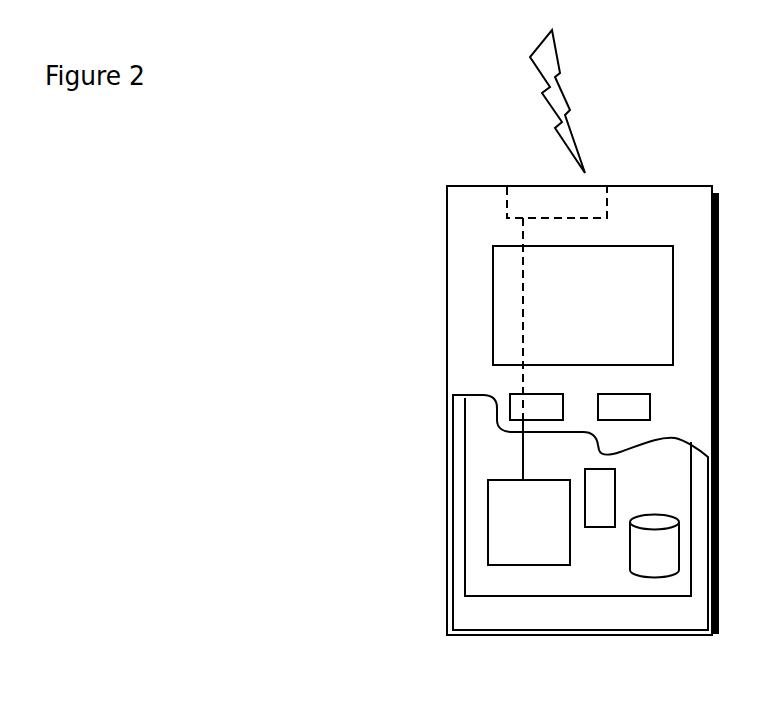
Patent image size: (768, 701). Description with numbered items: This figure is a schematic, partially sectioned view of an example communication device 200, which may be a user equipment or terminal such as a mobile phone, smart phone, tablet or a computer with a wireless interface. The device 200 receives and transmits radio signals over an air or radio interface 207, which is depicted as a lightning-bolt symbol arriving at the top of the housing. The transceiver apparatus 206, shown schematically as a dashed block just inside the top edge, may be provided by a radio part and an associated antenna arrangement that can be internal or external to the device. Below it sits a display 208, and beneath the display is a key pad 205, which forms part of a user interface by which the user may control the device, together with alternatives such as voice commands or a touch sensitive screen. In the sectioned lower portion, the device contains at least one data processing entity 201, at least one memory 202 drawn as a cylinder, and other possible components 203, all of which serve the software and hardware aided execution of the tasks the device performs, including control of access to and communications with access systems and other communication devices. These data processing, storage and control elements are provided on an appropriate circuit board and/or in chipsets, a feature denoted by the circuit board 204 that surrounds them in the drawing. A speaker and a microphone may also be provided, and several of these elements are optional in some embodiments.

The communication device 200 is at (447, 225).
The data processing entity 201 is at (493, 508).
The memory 202 is at (648, 557).
The other components 203 is at (600, 483).
The circuit board 204 is at (487, 582).
The key pad 205 is at (513, 408).
The transceiver apparatus 206 is at (597, 200).
The air or radio interface 207 is at (588, 123).
The display 208 is at (508, 294).